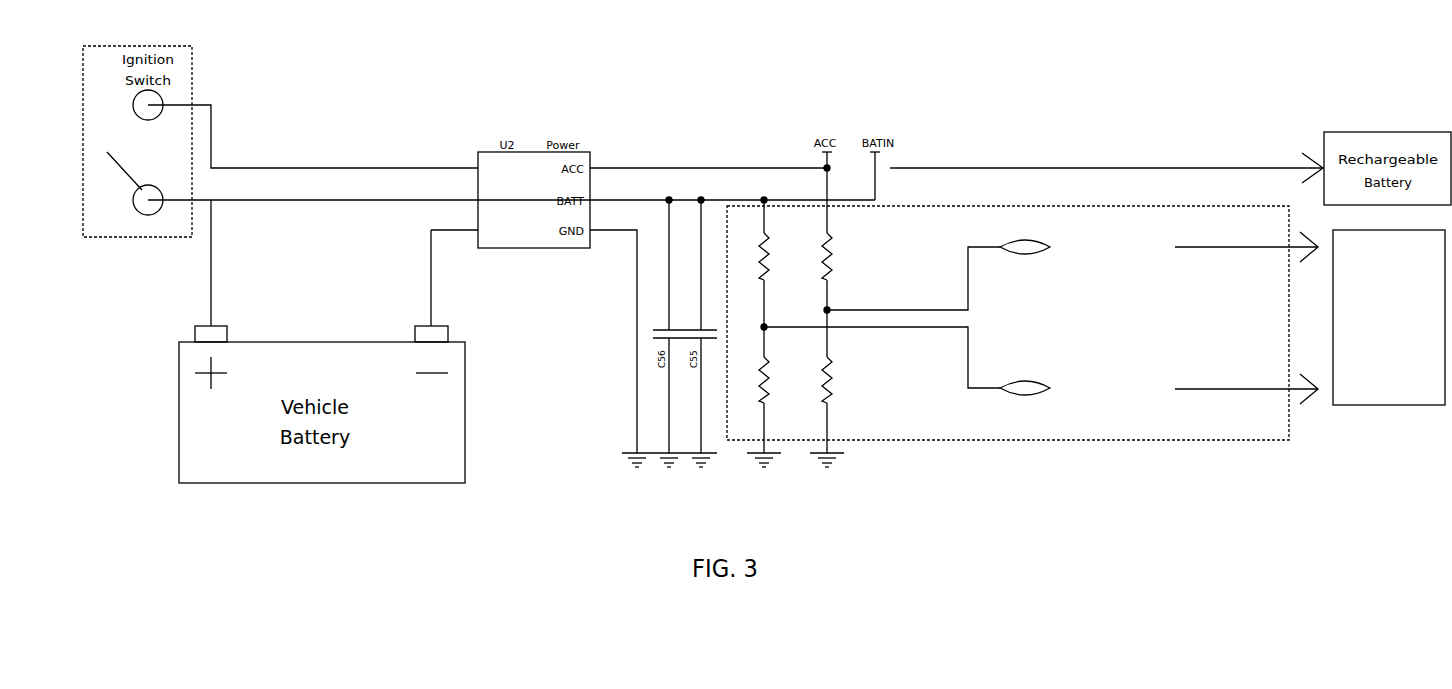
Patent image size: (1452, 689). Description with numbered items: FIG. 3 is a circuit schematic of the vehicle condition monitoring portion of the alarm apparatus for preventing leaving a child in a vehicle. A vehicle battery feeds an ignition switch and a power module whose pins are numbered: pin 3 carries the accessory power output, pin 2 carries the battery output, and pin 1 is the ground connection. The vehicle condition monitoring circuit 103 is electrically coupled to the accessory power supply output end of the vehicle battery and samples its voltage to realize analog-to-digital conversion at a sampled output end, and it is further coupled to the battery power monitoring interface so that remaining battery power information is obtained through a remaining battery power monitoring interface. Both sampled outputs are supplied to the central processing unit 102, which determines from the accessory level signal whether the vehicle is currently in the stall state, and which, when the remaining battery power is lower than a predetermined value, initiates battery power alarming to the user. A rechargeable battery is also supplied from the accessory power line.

The central processing unit 102 is at (1367, 405).
The vehicle condition monitoring circuit 103 is at (1073, 440).
The GND pin of power module U2 1 is at (613, 334).
The BATT pin of power module U2 2 is at (679, 176).
The ACC pin of power module U2 3 is at (708, 160).